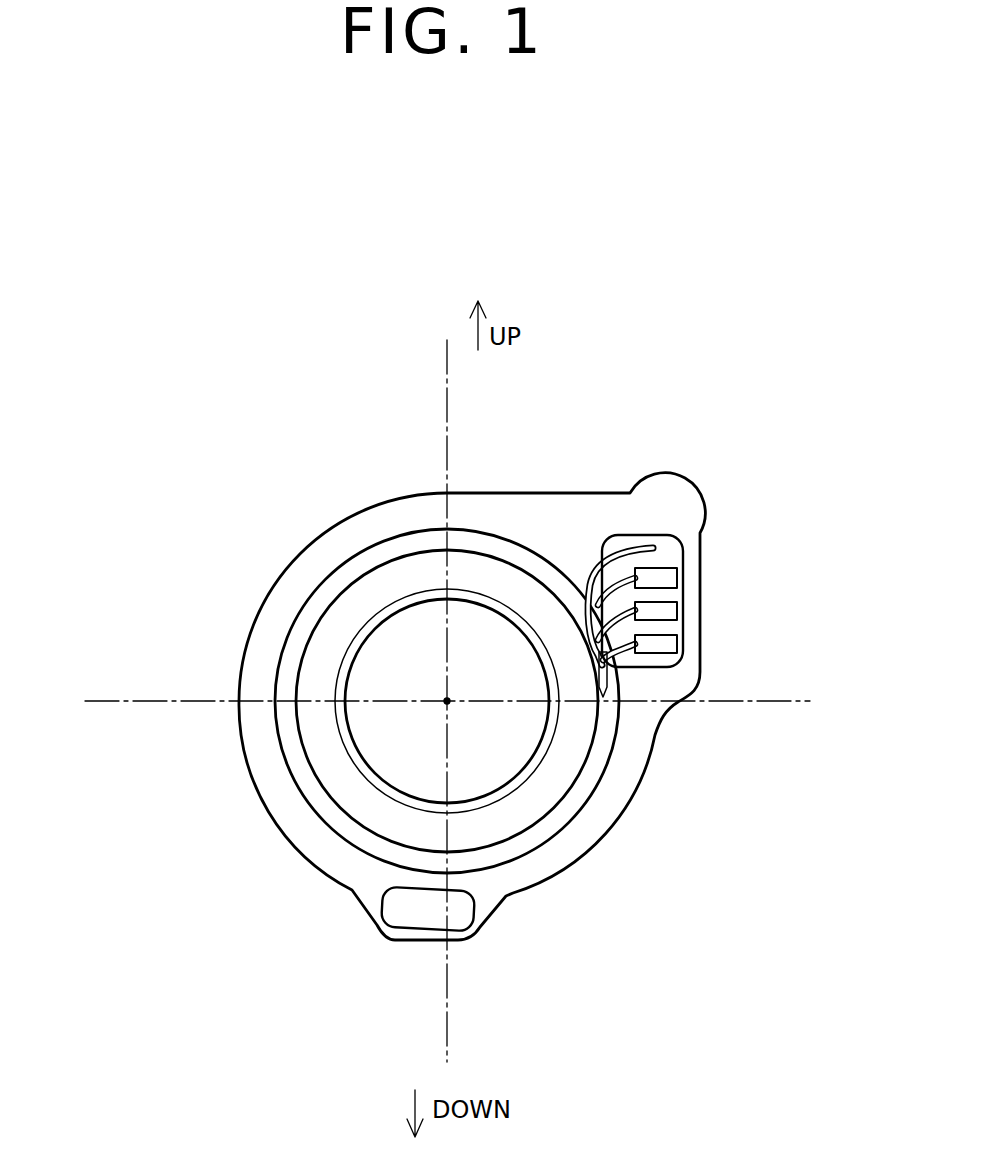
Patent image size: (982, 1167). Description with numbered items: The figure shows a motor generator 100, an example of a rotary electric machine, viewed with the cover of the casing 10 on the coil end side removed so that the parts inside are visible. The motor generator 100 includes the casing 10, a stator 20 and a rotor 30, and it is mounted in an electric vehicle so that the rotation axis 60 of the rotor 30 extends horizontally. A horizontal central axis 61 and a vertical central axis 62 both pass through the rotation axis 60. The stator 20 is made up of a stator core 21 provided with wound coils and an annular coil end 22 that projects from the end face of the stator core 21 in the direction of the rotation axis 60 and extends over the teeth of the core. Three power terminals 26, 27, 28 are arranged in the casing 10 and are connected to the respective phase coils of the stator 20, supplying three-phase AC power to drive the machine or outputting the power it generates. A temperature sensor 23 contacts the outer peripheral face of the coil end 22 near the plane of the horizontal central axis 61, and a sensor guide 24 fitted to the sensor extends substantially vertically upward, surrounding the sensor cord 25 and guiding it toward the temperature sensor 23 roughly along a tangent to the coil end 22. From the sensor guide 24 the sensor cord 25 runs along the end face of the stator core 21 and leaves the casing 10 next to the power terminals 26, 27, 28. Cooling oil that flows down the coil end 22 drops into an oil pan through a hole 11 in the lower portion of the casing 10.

The motor generator 100 is at (701, 276).
The casing 10 is at (472, 704).
The hole 11 is at (417, 917).
The stator 20 is at (393, 761).
The stator core 21 is at (293, 767).
The coil end 22 is at (340, 780).
The temperature sensor 23 is at (706, 579).
The sensor guide 24 is at (620, 672).
The sensor cord 25 is at (628, 548).
The power terminal 26 is at (670, 578).
The power terminal 27 is at (670, 610).
The power terminal 28 is at (670, 645).
The rotor 30 is at (527, 723).
The rotation axis 60 is at (447, 701).
The central axis 61 is at (143, 702).
The central axis 62 is at (447, 1012).